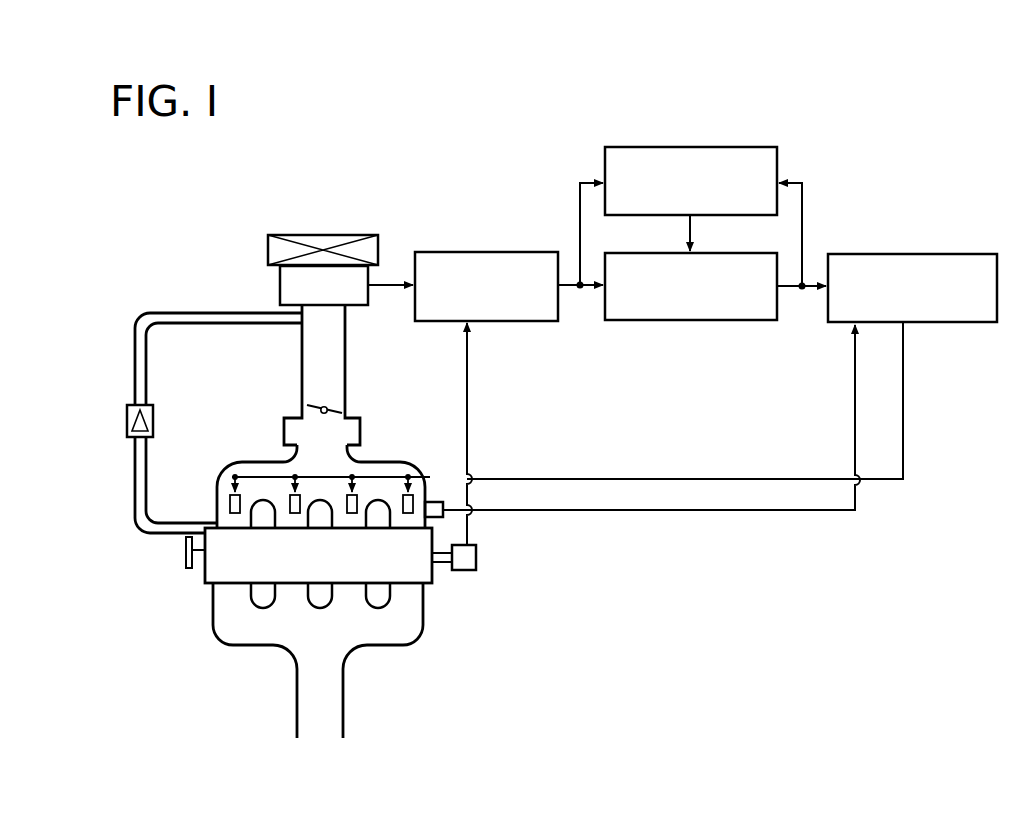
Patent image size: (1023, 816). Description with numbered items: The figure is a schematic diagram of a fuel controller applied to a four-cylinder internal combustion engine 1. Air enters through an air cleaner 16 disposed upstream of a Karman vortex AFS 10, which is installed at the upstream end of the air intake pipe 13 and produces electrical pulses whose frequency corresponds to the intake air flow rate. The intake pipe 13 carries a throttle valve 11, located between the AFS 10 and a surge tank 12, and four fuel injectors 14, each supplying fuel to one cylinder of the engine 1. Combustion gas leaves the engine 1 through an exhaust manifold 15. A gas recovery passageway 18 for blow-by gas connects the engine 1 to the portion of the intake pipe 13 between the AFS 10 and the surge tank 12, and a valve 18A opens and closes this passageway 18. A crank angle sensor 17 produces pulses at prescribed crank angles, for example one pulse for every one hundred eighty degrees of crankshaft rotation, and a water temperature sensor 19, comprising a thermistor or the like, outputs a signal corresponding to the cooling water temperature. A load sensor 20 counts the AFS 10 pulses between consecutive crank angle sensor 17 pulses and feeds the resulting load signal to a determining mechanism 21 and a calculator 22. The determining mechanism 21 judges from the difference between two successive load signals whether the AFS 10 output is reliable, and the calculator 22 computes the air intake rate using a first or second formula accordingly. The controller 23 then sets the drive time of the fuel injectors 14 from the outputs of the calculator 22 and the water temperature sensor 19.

The internal combustion engine 1 is at (432, 580).
The Karman vortex AFS 10 is at (280, 286).
The throttle valve 11 is at (330, 410).
The surge tank 12 is at (284, 422).
The air intake pipe 13 is at (222, 470).
The fuel injectors 14 is at (217, 503).
The exhaust manifold 15 is at (424, 630).
The air cleaner 16 is at (303, 236).
The crank angle sensor 17 is at (478, 556).
The gas recovery passageway 18 is at (135, 491).
The valve 18A is at (127, 424).
The water temperature sensor 19 is at (440, 500).
The load sensor 20 is at (492, 252).
The determining mechanism 21 is at (712, 147).
The calculator 22 is at (705, 253).
The controller 23 is at (925, 254).